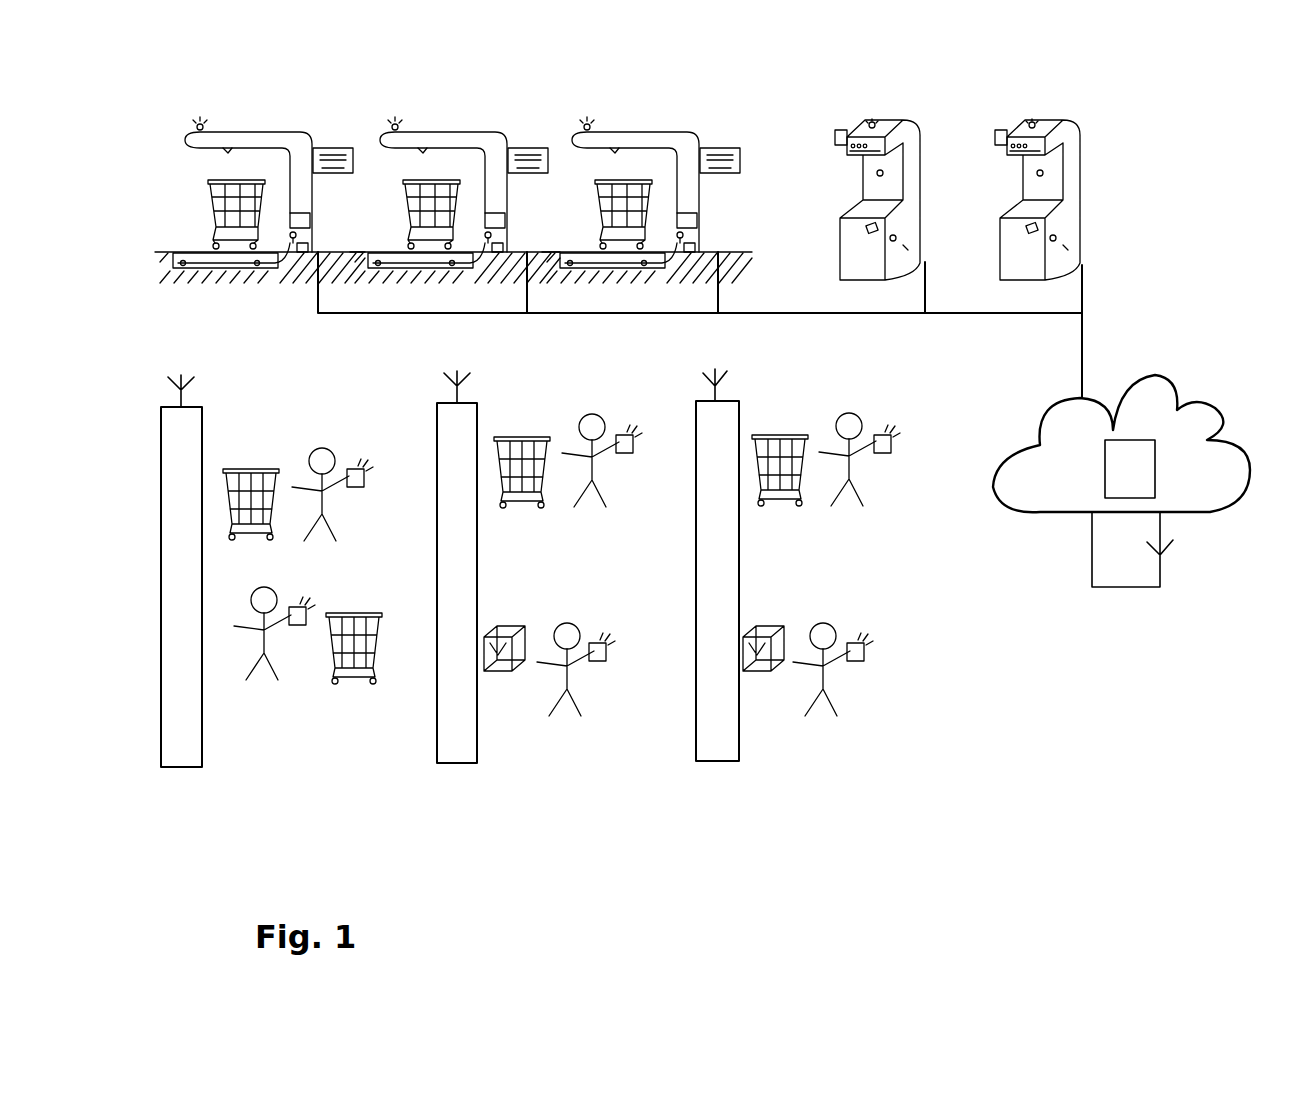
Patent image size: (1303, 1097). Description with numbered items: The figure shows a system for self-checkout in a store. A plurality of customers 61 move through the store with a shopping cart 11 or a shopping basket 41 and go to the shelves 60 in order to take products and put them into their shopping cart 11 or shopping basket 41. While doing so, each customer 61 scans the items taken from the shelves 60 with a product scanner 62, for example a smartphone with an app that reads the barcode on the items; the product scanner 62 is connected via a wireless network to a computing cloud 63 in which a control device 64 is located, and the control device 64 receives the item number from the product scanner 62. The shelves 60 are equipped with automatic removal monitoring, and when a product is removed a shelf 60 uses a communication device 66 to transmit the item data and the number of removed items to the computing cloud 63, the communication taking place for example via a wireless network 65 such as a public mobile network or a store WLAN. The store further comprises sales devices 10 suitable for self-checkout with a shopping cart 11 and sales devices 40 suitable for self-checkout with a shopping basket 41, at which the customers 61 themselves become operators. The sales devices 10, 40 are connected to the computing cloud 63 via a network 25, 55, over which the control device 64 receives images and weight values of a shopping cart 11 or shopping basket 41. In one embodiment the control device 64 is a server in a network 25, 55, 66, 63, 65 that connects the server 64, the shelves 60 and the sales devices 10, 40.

The sales device 10 is at (453, 173).
The sales device 40 is at (973, 163).
The network 25 is at (700, 325).
The network 55 is at (950, 320).
The shelf 60 is at (204, 770).
The communication device 66 is at (182, 367).
The shopping cart 11 is at (242, 467).
The customer 61 is at (330, 436).
The product scanner 62 is at (366, 474).
The shopping basket 41 is at (511, 626).
The computing cloud 63 is at (1170, 372).
The control device 64 is at (1103, 467).
The wireless network 65 is at (1170, 560).